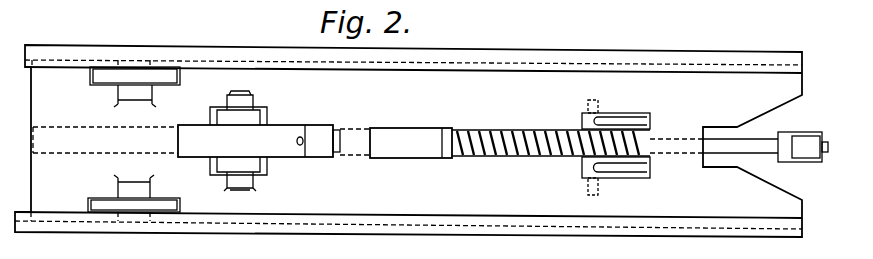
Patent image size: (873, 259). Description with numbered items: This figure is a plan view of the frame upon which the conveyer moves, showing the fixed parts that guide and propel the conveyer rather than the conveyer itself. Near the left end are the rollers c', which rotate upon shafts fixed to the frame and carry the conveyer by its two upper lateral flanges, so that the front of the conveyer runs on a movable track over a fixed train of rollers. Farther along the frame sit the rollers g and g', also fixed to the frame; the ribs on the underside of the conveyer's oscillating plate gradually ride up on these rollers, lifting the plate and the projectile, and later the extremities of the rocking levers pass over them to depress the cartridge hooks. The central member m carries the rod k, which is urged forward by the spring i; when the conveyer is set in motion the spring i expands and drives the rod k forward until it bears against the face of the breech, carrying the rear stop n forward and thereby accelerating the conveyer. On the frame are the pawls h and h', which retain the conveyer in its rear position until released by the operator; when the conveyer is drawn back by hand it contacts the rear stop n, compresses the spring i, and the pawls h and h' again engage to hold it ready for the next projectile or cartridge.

The roller c' is at (132, 88).
The roller g is at (253, 108).
The roller g' is at (256, 173).
The slide block m is at (264, 129).
The rod k is at (398, 128).
The spring i is at (521, 157).
The pawl h is at (622, 107).
The pawl h' is at (618, 182).
The rear stop n is at (803, 138).